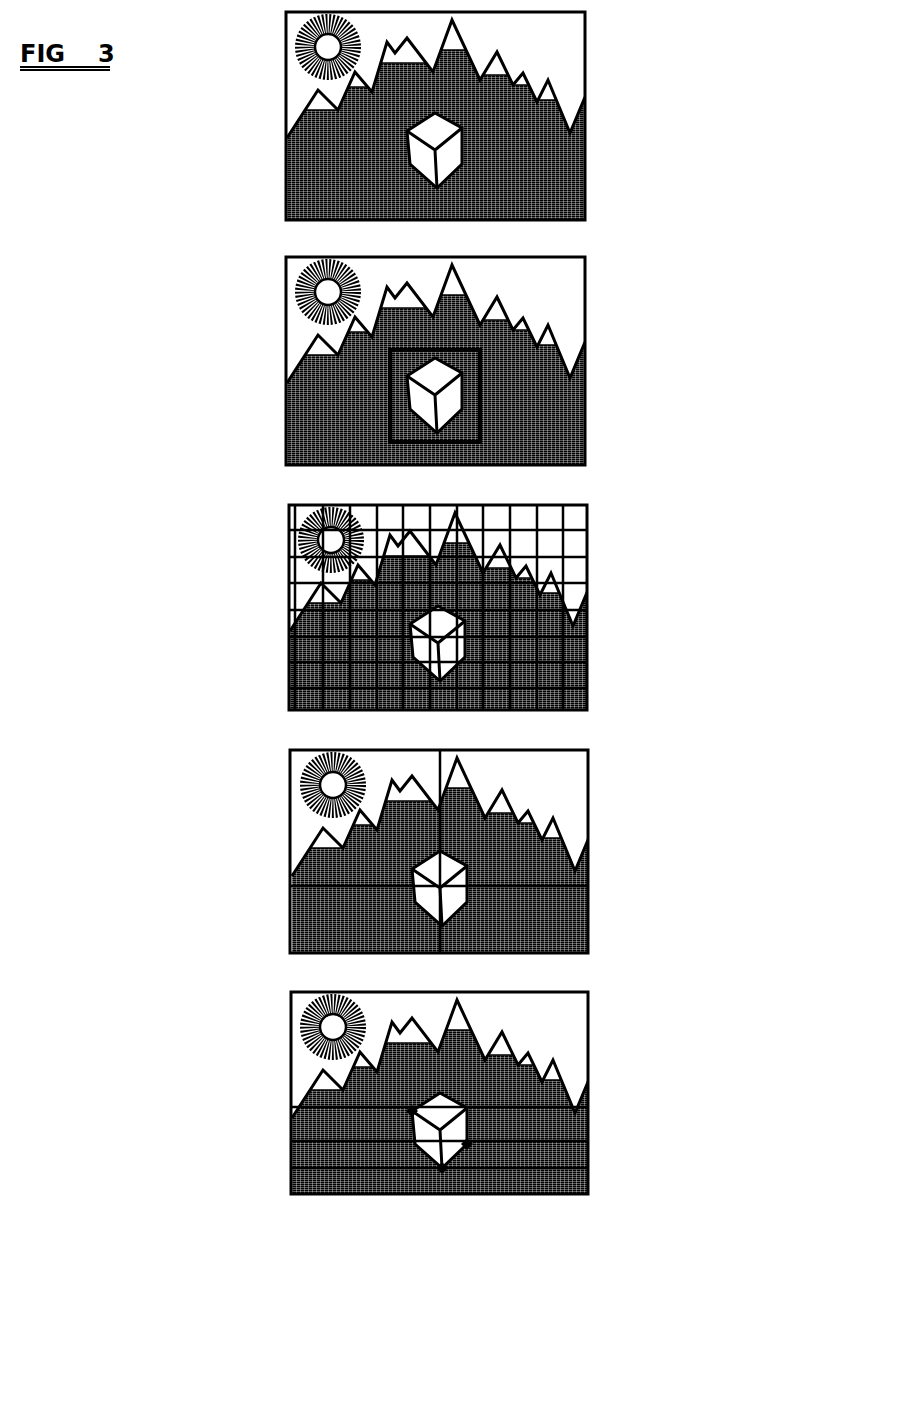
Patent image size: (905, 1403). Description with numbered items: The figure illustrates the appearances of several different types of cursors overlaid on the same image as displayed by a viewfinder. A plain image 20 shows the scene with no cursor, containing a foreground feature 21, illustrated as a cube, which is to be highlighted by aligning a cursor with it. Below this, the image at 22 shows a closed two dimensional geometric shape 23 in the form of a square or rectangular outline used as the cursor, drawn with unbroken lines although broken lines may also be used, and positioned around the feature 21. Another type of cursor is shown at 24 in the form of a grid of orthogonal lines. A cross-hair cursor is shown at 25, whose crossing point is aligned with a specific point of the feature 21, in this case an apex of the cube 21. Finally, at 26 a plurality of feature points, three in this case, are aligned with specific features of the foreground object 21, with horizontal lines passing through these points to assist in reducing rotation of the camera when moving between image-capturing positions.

The plain image 20 is at (453, 130).
The foreground feature 21 is at (410, 158).
The image with box cursor 22 is at (436, 378).
The closed two dimensional geometric shape 23 is at (390, 402).
The grid cursor 24 is at (588, 595).
The cross-hair cursor 25 is at (589, 847).
The feature points 26 is at (589, 1107).